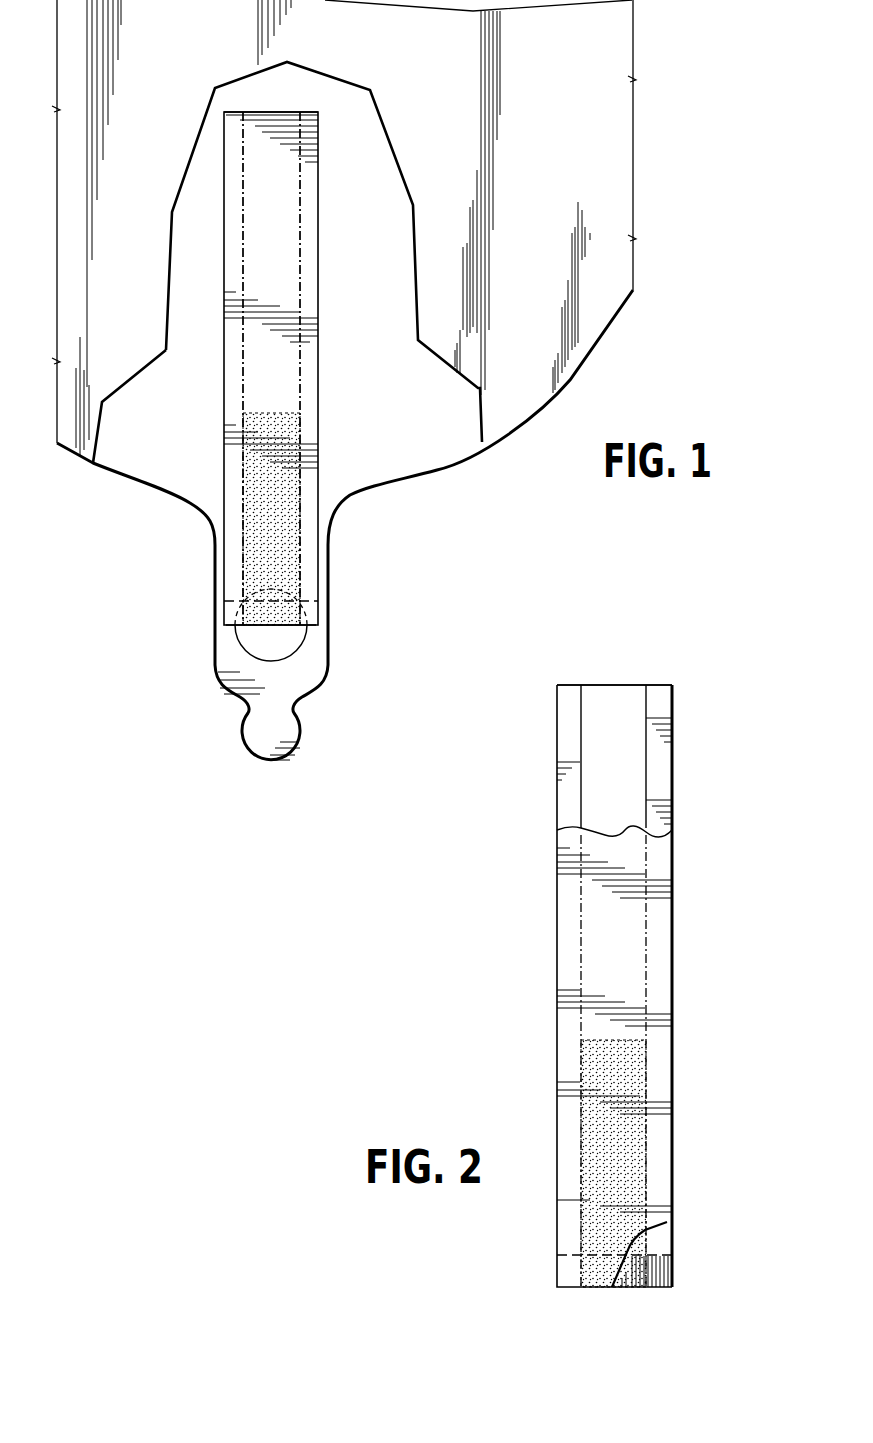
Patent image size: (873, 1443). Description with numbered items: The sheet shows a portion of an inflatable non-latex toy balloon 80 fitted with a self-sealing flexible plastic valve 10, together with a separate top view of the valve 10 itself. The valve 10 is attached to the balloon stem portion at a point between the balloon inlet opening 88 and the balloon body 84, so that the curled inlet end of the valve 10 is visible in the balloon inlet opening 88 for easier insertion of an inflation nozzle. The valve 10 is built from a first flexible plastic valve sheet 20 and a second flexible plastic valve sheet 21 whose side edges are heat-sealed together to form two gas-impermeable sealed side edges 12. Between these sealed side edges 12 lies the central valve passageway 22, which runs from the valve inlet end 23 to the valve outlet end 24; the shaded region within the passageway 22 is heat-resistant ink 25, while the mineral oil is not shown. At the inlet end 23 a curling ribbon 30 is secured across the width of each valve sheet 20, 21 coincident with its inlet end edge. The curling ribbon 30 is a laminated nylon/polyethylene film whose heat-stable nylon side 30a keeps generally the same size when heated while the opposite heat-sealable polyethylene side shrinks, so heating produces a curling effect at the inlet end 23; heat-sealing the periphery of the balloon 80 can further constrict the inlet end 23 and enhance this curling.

In FIG. 1, the self-sealing flexible plastic valve 10 is at (261, 376).
In FIG. 2, the self-sealing flexible plastic valve 10 is at (612, 989).
In FIG. 1, the sealed side edge 12 is at (235, 262).
In FIG. 2, the sealed side edge 12 is at (655, 935).
In FIG. 2, the first flexible plastic valve sheet 20 is at (612, 989).
In FIG. 2, the second flexible plastic valve sheet 21 is at (670, 765).
In FIG. 1, the valve passageway 22 is at (275, 230).
In FIG. 2, the valve passageway 22 is at (620, 895).
In FIG. 1, the valve inlet end 23 is at (262, 632).
In FIG. 2, the valve inlet end 23 is at (622, 1292).
In FIG. 1, the valve outlet end 24 is at (282, 103).
In FIG. 2, the valve outlet end 24 is at (625, 682).
In FIG. 1, the heat-resistant ink 25 is at (245, 478).
In FIG. 2, the heat-resistant ink 25 is at (615, 1180).
In FIG. 1, the curling ribbon 30 is at (228, 614).
In FIG. 2, the curling ribbon 30 is at (660, 1262).
In FIG. 2, the heat-stable side of curling ribbon 30a is at (670, 1277).
In FIG. 1, the inflatable non-latex toy balloon 80 is at (522, 438).
In FIG. 1, the balloon body 84 is at (382, 455).
In FIG. 1, the balloon inlet opening 88 is at (300, 656).